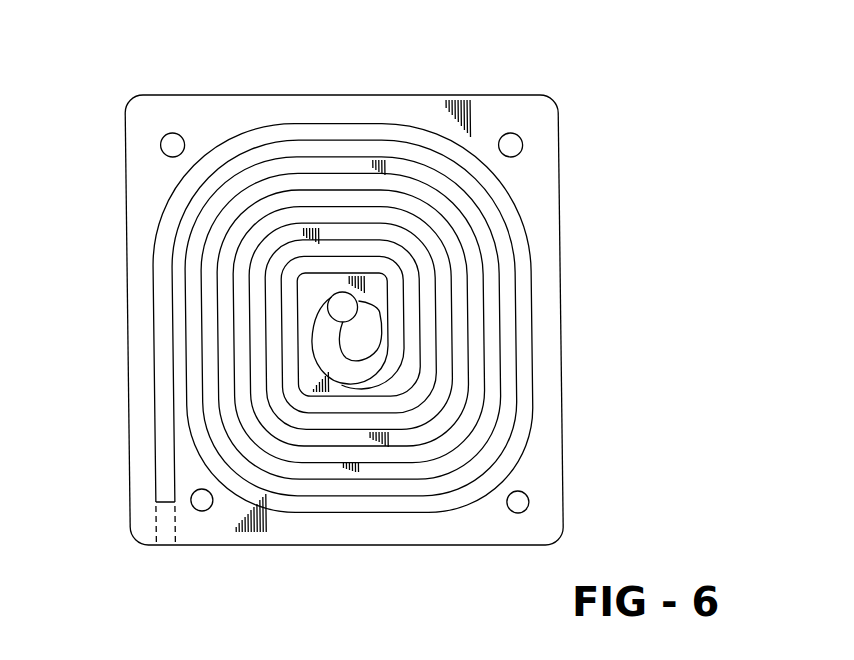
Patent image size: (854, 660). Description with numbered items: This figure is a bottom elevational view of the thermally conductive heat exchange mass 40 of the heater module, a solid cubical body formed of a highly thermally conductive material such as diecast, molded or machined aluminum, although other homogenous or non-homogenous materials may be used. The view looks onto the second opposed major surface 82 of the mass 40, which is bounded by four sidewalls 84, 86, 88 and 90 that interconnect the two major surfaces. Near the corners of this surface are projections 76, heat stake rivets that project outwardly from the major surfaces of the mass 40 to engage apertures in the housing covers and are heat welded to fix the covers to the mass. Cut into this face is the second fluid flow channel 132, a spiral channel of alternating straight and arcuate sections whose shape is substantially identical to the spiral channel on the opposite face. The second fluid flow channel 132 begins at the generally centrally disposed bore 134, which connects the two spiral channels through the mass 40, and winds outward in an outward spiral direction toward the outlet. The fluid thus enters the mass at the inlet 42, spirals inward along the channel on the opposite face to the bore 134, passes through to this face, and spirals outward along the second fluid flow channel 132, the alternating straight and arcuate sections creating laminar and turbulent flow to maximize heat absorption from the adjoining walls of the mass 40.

The heat exchange mass 40 is at (368, 308).
The inlet 42 is at (150, 510).
The projections 76 is at (179, 134).
The second opposed major surface 82 is at (562, 295).
The sidewall 84 is at (408, 546).
The sidewall 86 is at (567, 403).
The sidewall 88 is at (429, 95).
The sidewall 90 is at (126, 238).
The second fluid flow channel 132 is at (490, 206).
The bore 134 is at (337, 293).